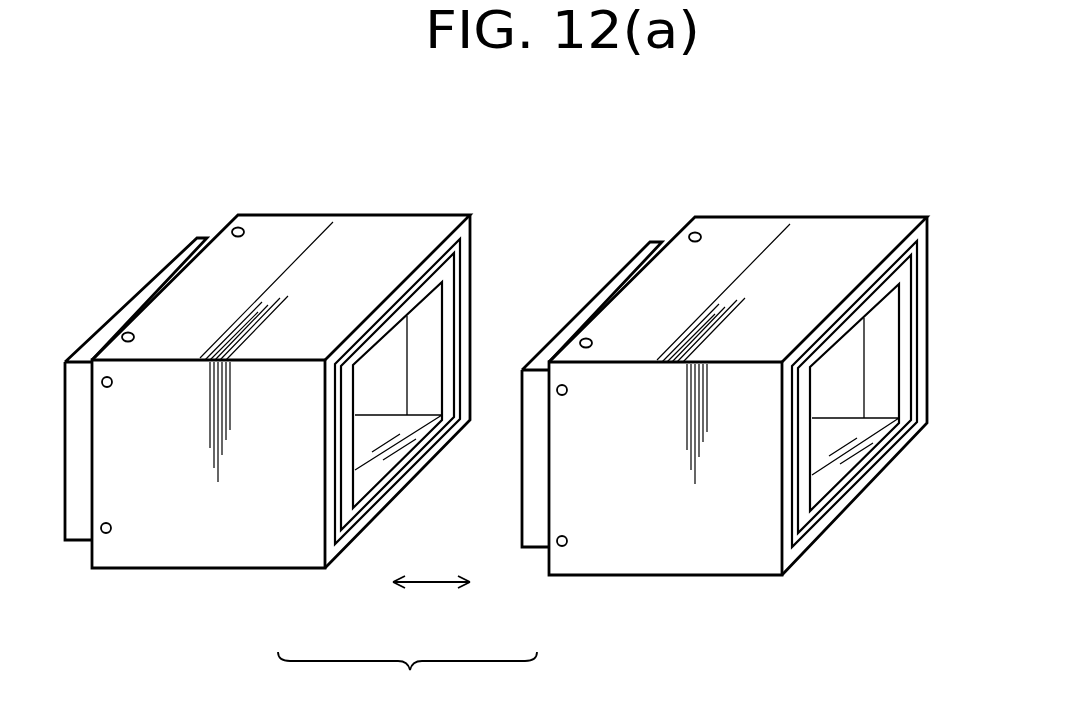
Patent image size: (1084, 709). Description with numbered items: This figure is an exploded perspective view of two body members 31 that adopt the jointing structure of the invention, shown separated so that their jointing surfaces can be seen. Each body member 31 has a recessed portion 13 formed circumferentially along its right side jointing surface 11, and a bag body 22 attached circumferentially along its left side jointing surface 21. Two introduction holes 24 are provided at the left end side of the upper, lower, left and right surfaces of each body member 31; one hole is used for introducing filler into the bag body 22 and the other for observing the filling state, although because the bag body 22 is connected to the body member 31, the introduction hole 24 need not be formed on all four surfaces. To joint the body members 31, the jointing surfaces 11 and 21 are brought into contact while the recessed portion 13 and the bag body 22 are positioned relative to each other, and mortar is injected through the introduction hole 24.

The right side jointing surface 11 is at (330, 553).
The recessed portion 13 is at (464, 270).
The left side jointing surface 21 is at (545, 560).
The bag body 22 is at (605, 283).
The introduction hole 24 is at (236, 229).
The body member 31 is at (501, 377).